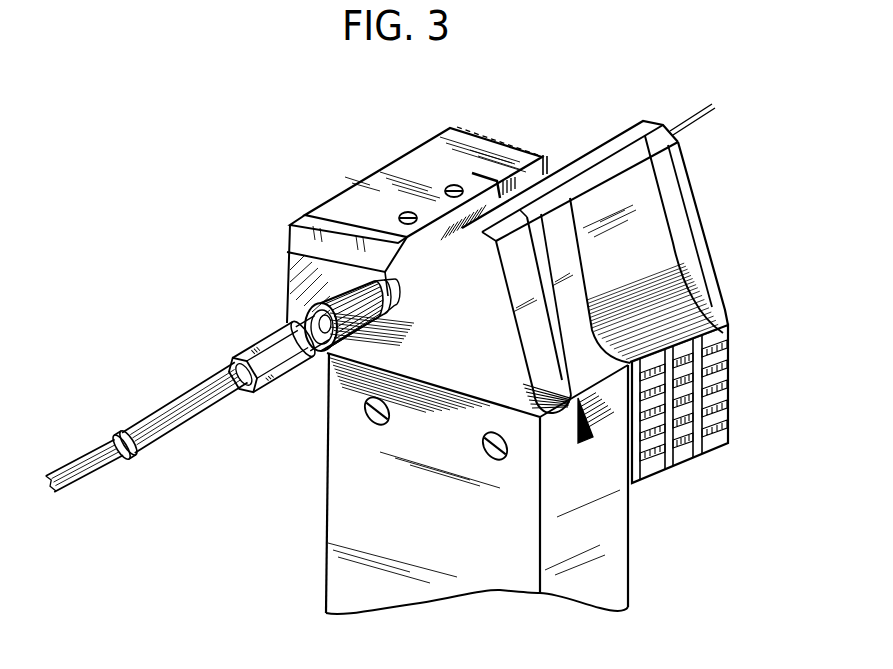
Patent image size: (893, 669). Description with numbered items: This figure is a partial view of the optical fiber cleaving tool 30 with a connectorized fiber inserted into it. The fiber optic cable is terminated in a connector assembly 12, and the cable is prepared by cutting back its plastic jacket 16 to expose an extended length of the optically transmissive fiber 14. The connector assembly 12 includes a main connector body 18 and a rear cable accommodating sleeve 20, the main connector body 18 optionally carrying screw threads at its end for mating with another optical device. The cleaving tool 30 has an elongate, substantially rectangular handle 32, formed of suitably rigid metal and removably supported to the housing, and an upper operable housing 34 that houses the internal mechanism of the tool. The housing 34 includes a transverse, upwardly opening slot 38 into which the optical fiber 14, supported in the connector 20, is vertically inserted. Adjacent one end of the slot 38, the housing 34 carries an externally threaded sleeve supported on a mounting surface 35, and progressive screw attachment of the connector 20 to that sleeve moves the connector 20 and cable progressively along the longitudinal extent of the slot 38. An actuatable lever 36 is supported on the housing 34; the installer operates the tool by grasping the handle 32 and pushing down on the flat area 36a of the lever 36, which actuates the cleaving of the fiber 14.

The connector assembly 12 is at (167, 397).
The optically transmissive fiber 14 is at (706, 102).
The plastic jacket 16 is at (100, 466).
The main connector body 18 is at (323, 290).
The rear cable accommodating sleeve 20 is at (228, 390).
The optical fiber cleaving tool 30 is at (637, 523).
The handle 32 is at (577, 567).
The upper operable housing 34 is at (377, 180).
The mounting surface 35 is at (330, 270).
The actuatable lever 36 is at (693, 302).
The flat area 36a is at (685, 427).
The slot 38 is at (544, 155).